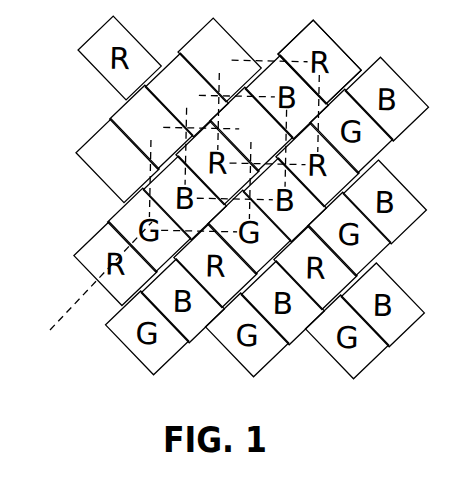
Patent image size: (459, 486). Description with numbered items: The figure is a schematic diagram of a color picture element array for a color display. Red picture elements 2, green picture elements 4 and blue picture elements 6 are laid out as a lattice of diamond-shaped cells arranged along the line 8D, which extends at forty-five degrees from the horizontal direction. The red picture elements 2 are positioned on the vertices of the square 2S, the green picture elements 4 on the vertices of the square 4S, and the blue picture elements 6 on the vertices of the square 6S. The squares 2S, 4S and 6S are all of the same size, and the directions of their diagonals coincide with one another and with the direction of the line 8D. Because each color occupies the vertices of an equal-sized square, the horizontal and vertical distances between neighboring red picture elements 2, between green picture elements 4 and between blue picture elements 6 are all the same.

The red picture elements 2 is at (222, 36).
The green picture elements 4 is at (171, 56).
The blue picture elements 6 is at (122, 113).
The square 2S is at (312, 78).
The square 4S is at (265, 122).
The square 6S is at (153, 173).
The line 8D is at (63, 313).